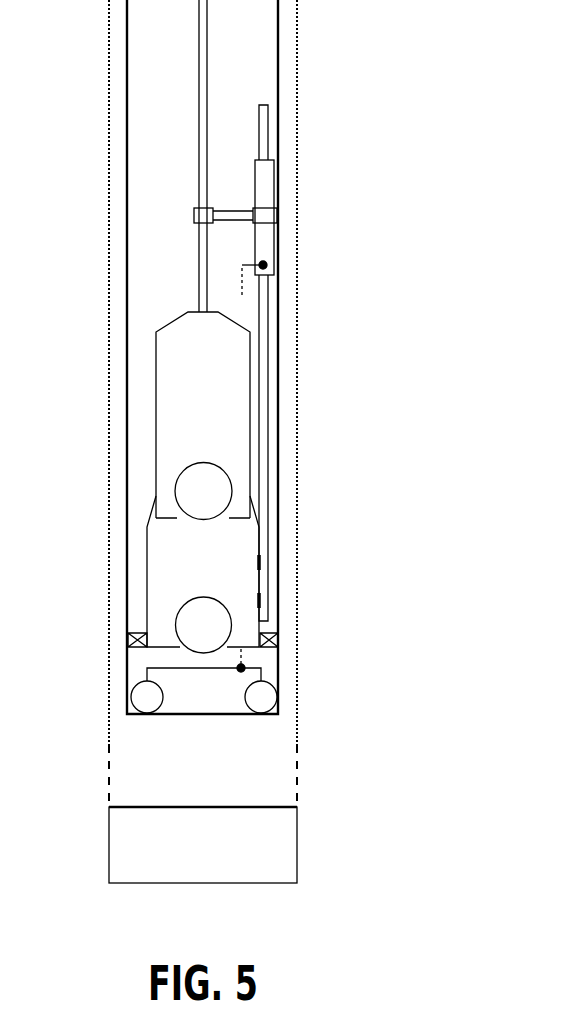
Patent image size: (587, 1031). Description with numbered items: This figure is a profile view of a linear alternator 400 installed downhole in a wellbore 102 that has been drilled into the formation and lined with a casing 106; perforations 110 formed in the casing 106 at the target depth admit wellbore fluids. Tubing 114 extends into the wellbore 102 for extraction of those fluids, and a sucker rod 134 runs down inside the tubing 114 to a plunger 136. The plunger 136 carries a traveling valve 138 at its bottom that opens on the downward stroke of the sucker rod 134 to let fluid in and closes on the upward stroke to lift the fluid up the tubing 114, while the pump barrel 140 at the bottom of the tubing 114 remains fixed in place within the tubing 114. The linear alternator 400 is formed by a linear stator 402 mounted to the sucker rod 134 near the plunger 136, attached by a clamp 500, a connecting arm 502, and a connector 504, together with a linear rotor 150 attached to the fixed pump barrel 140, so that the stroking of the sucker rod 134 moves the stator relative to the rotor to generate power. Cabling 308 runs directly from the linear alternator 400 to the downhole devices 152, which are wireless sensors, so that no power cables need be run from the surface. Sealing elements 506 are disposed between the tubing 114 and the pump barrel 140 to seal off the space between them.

The wellbore 102 is at (140, 37).
The casing 106 is at (109, 175).
The perforations 110 is at (94, 766).
The tubing 114 is at (268, 95).
The sucker rod 134 is at (208, 43).
The plunger 136 is at (156, 415).
The traveling valve 138 is at (175, 492).
The pump barrel 140 is at (147, 565).
The linear rotor 150 is at (268, 304).
The devices 152 is at (131, 697).
The cabling 308 is at (242, 265).
The linear alternator 400 is at (403, 206).
The linear stator 402 is at (274, 177).
The clamp 500 is at (278, 214).
The connecting arm 502 is at (241, 211).
The connector 504 is at (196, 208).
The sealing elements 506 is at (278, 640).